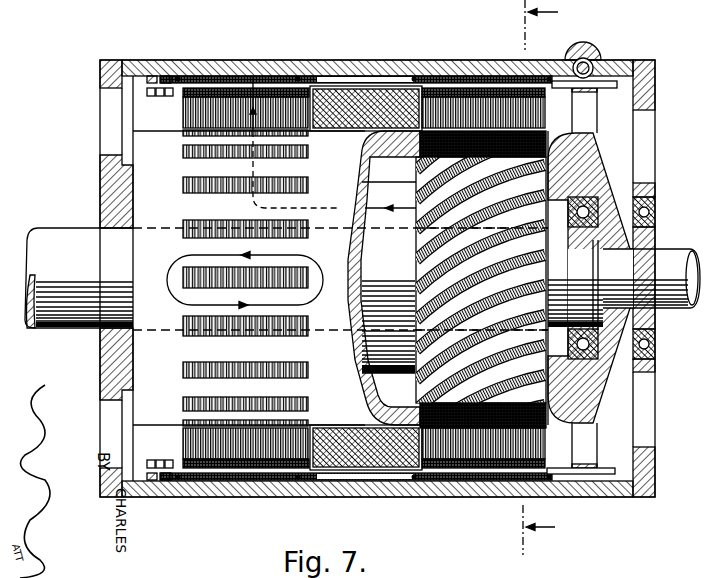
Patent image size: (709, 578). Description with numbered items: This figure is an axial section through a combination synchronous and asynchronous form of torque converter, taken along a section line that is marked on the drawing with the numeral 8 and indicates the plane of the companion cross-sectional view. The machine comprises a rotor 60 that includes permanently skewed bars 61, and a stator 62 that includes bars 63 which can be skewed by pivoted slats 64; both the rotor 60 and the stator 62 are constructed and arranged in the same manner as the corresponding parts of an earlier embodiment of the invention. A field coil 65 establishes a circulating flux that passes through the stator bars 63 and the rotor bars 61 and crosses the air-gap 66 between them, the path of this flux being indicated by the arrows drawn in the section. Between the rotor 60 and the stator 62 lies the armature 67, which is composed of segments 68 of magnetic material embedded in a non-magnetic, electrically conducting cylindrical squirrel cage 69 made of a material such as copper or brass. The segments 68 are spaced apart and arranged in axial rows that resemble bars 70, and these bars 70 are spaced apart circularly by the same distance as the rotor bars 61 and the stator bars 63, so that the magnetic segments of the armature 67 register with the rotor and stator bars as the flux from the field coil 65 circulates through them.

The rotor 60 is at (548, 180).
The permanently skewed bars 61 is at (465, 226).
The stator 62 is at (493, 84).
The stator bars 63 is at (196, 110).
The pivoted slats 64 is at (616, 82).
The field coil 65 is at (356, 102).
The air-gap 66 is at (551, 128).
The armature 67 is at (152, 404).
The segments 68 is at (182, 227).
The squirrel cage 69 is at (340, 167).
The bars 70 is at (624, 283).
The section line 8- 8 is at (540, 277).